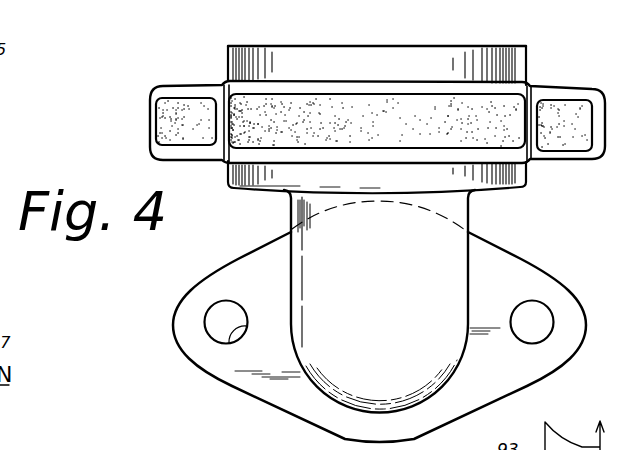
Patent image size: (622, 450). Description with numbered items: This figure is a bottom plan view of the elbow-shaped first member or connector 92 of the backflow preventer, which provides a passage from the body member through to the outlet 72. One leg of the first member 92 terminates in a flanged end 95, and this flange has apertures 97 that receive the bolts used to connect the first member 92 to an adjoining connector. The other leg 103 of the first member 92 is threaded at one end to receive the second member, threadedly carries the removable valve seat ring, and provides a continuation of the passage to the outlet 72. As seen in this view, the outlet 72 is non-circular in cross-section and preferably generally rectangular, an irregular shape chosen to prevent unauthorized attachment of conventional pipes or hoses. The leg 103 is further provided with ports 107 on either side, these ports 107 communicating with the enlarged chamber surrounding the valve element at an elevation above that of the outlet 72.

The first member 92 is at (503, 199).
The outlet 72 is at (381, 141).
The ports 107 is at (201, 131).
The leg 103 is at (288, 218).
The flanged end 95 is at (277, 406).
The apertures 97 is at (379, 332).